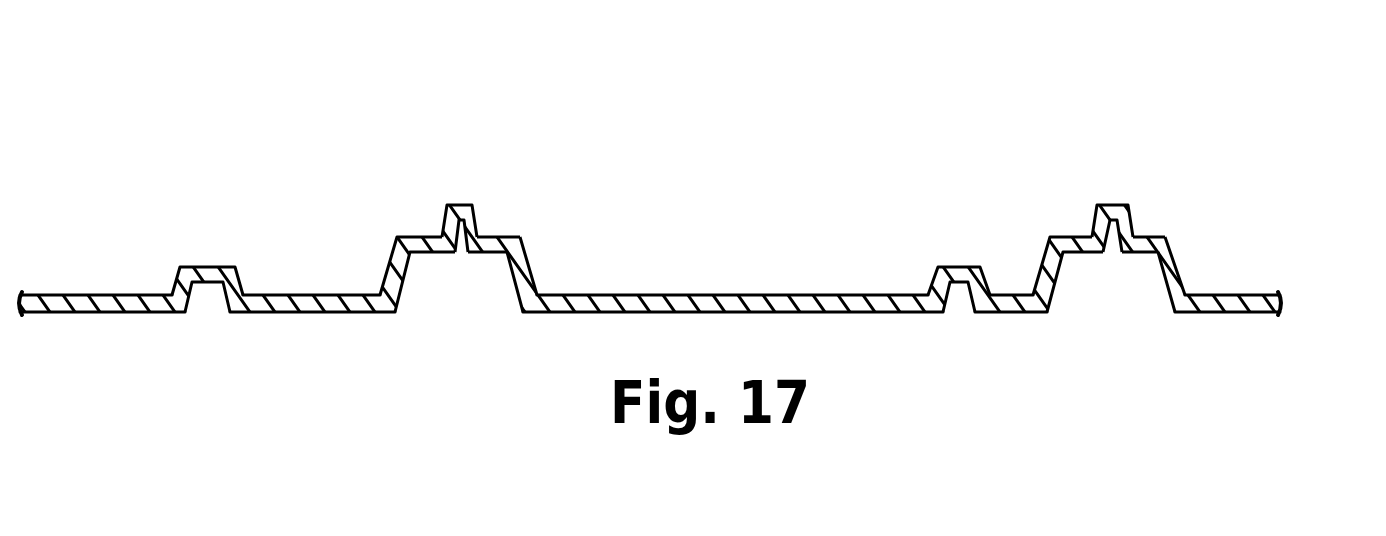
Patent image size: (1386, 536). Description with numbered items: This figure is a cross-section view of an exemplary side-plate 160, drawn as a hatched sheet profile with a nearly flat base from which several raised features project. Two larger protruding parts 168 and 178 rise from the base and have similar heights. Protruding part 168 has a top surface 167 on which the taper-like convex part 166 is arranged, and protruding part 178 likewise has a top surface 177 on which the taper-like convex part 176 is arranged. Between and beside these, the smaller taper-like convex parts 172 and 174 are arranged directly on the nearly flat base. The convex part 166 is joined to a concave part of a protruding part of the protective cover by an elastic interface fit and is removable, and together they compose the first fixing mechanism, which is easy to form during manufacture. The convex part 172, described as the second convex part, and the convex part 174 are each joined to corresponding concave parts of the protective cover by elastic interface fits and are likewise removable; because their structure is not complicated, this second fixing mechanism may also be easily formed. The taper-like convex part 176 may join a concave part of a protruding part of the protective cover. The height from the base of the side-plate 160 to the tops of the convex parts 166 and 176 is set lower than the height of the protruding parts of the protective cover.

The side-plate 160 is at (1274, 292).
The taper-like convex part 166 is at (478, 216).
The top surface 167 is at (508, 233).
The protruding part 168 is at (537, 285).
The taper-like convex part (second convex part) 172 is at (207, 267).
The taper-like convex part 174 is at (957, 267).
The taper-like convex part 176 is at (1130, 219).
The top surface 177 is at (1164, 237).
The protruding part 178 is at (1187, 284).